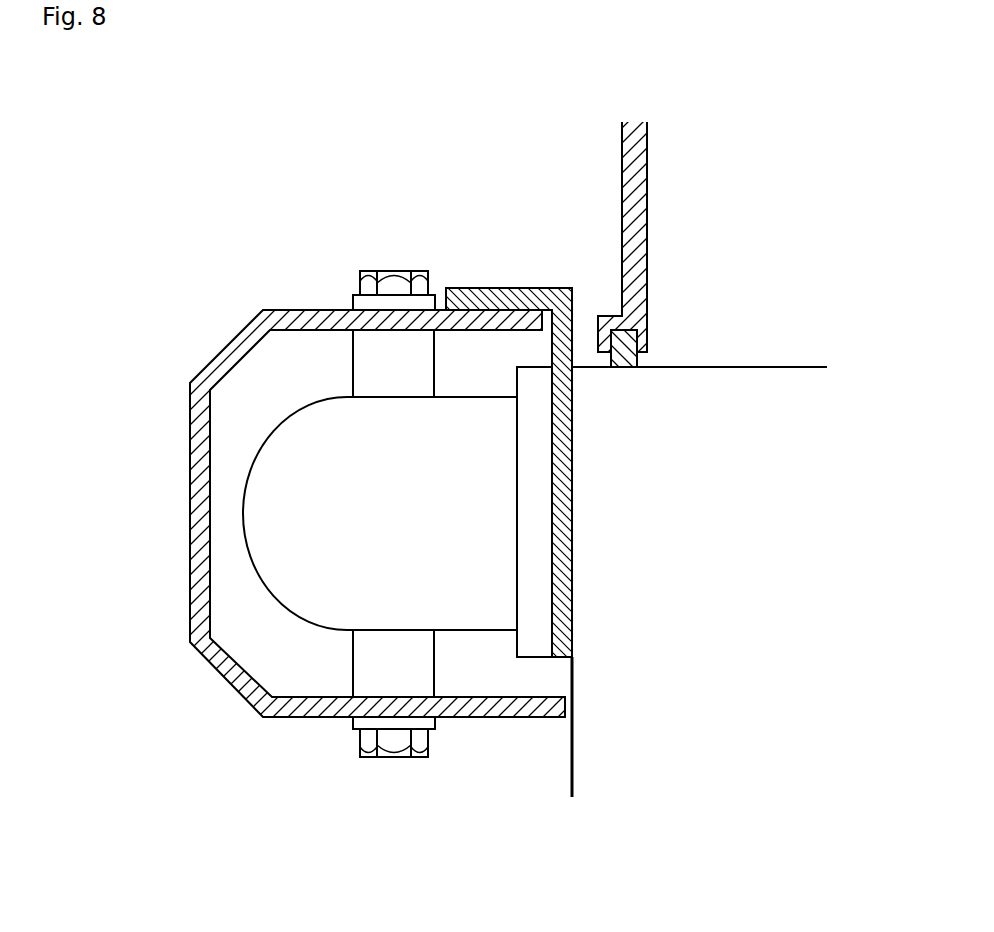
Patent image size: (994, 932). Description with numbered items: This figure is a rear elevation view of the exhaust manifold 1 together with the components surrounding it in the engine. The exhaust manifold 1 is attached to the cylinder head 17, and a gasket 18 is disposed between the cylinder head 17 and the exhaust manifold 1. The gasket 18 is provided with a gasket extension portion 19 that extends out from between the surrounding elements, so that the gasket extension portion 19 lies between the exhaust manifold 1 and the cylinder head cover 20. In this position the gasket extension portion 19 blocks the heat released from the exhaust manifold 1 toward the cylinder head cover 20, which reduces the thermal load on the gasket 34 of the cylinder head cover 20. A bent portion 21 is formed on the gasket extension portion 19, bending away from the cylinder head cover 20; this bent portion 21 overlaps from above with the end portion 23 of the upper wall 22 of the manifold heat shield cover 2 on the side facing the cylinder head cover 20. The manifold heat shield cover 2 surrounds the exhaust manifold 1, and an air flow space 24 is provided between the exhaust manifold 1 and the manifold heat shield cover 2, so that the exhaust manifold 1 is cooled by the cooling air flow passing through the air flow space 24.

The exhaust manifold 1 is at (310, 602).
The manifold heat shield cover 2 is at (225, 348).
The cylinder head 17 is at (754, 382).
The gasket 18 is at (572, 507).
The gasket extension portion 19 is at (563, 287).
The cylinder head cover 20 is at (630, 158).
The bent portion 21 is at (479, 295).
The upper wall 22 is at (313, 320).
The end portion 23 is at (502, 320).
The air flow space 24 is at (220, 405).
The gasket 34 is at (628, 356).